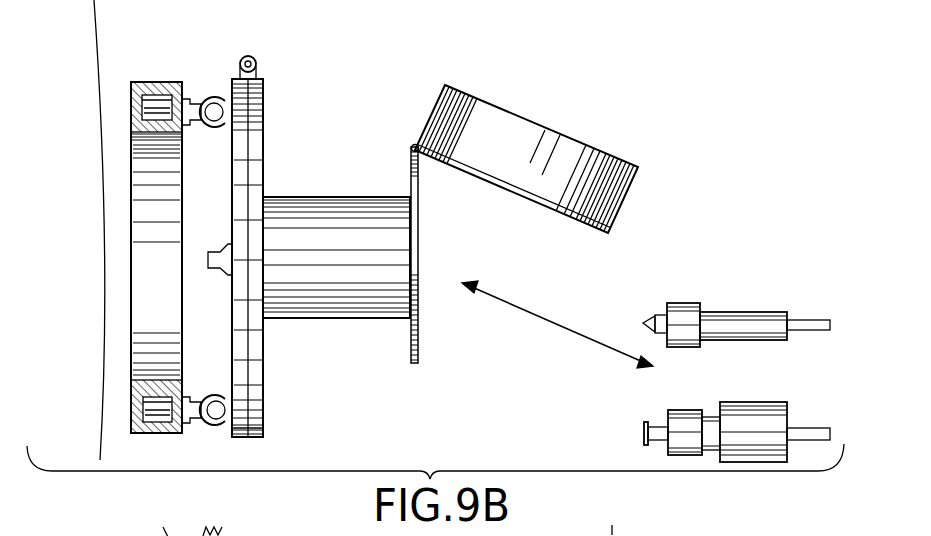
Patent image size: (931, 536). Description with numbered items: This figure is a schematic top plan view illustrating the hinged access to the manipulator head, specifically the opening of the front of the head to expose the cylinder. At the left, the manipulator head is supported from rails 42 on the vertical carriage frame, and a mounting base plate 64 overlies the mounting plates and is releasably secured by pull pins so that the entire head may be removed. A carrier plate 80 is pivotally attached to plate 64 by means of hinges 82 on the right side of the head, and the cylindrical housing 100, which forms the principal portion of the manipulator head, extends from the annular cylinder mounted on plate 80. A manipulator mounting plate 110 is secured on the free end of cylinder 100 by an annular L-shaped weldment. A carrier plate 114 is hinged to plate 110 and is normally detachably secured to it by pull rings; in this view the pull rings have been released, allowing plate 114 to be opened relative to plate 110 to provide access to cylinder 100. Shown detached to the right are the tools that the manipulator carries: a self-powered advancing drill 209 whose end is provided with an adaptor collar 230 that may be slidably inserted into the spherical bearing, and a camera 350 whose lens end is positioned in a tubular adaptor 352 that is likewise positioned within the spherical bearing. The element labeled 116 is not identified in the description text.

The rails 42 is at (209, 104).
The hinges 82 is at (257, 66).
The carrier plate 80 is at (262, 398).
The mounting base plate 64 is at (245, 440).
The cylindrical housing 100 is at (335, 313).
The manipulator mounting plate 110 is at (421, 243).
The hinge 116 is at (413, 145).
The carrier plate 114 is at (493, 187).
The adaptor collar 230 is at (681, 304).
The drill 209 is at (742, 312).
The tubular adaptor 352 is at (690, 410).
The camera 350 is at (754, 402).